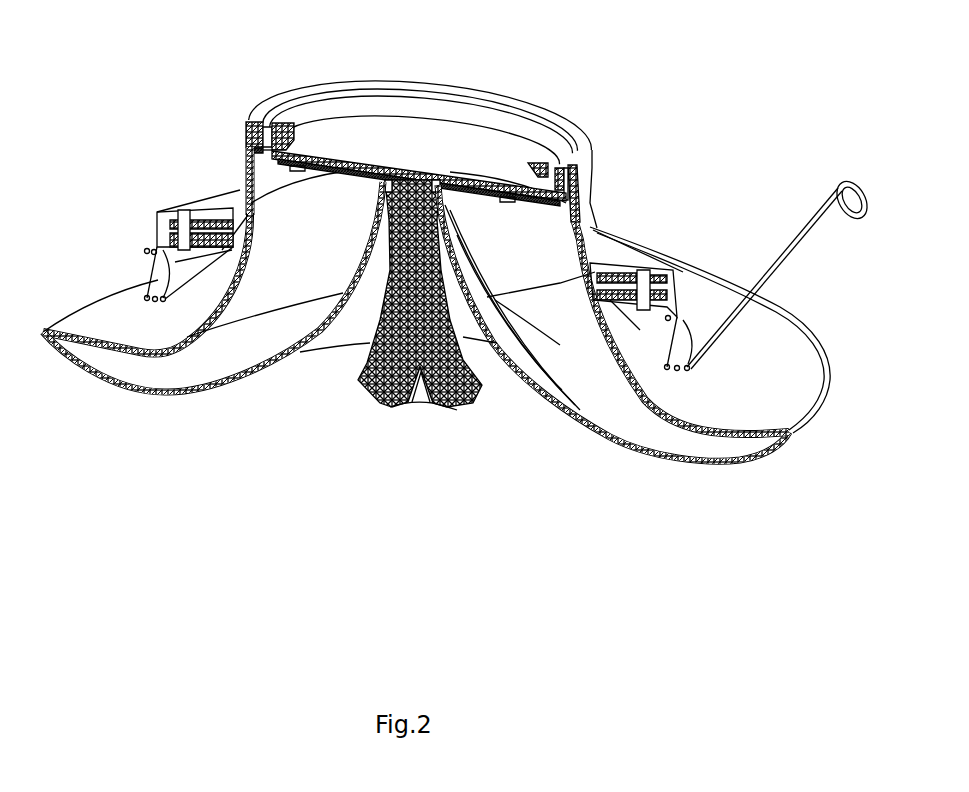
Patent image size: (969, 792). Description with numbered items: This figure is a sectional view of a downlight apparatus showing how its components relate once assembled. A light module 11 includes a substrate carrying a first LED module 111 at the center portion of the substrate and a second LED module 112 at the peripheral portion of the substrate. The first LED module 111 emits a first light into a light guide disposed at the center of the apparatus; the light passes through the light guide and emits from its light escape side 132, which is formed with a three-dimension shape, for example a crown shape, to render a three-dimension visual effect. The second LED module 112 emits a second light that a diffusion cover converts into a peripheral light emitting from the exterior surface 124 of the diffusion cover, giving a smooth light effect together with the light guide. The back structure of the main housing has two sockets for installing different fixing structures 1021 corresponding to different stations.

The light module 11 is at (471, 180).
The first LED module 111 is at (417, 170).
The second LED module 112 is at (583, 157).
The light escape side 132 is at (453, 407).
The exterior surface 124 is at (580, 417).
The fixing structure 1021 is at (805, 243).